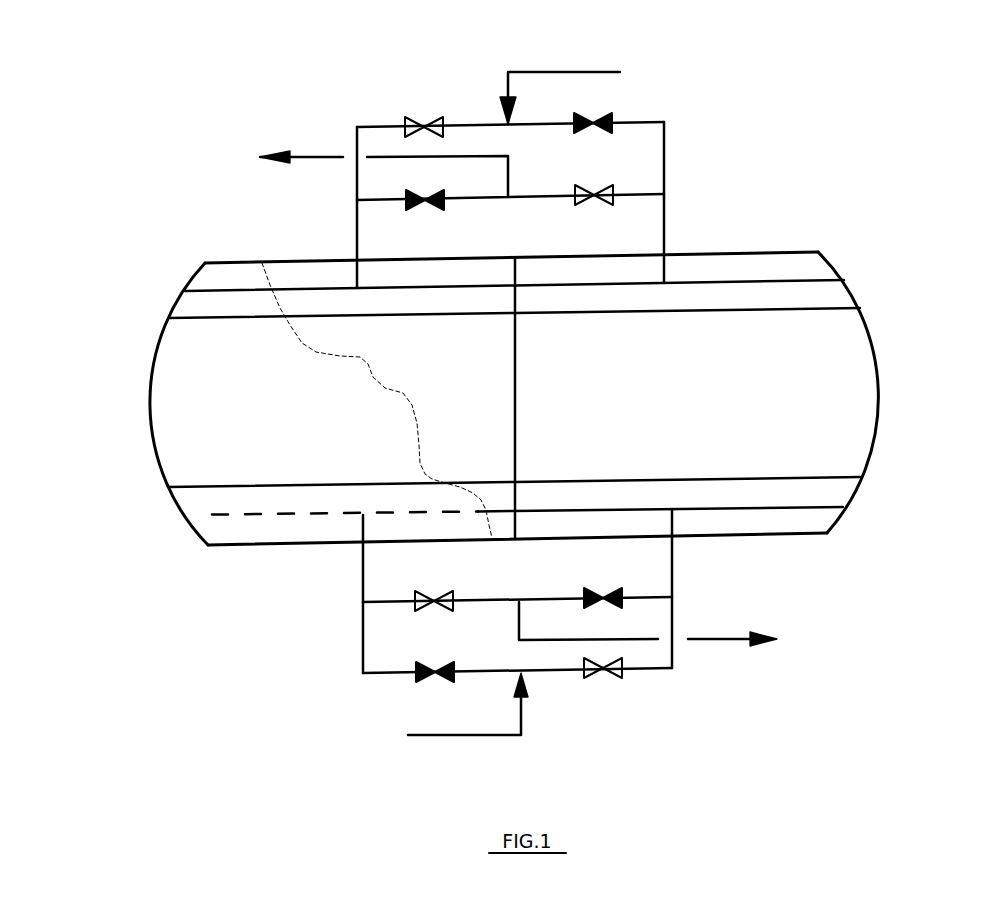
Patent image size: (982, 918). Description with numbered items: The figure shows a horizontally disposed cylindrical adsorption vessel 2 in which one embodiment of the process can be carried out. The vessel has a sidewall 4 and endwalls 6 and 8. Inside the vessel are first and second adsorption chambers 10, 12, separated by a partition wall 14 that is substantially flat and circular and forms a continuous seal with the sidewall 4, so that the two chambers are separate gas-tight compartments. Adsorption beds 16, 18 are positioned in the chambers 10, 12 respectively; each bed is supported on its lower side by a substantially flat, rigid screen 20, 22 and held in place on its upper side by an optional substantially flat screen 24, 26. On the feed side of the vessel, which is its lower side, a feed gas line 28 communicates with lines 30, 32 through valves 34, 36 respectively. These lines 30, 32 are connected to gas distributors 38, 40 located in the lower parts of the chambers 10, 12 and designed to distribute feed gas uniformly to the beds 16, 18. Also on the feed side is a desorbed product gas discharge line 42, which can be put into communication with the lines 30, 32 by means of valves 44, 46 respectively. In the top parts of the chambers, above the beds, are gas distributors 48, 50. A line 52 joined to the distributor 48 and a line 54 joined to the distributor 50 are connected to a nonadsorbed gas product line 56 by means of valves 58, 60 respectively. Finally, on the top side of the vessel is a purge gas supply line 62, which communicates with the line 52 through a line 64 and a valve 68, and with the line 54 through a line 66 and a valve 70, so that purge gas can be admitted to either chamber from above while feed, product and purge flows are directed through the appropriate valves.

The adsorption vessel 2 is at (887, 258).
The sidewall 4 is at (787, 535).
The endwall 6 is at (152, 442).
The endwall 8 is at (878, 400).
The first adsorption chamber 10 is at (444, 413).
The second adsorption chamber 12 is at (690, 403).
The partition wall 14 is at (517, 409).
The adsorption bed 16 is at (178, 362).
The adsorption bed 18 is at (848, 348).
The screen 20 is at (337, 487).
The screen 22 is at (828, 477).
The screen 24 is at (350, 318).
The screen 26 is at (745, 310).
The feed gas line 28 is at (522, 713).
The line 30 is at (364, 629).
The line 32 is at (672, 605).
The valve 34 is at (418, 678).
The valve 36 is at (617, 672).
The gas distributor 38 is at (247, 517).
The gas distributor 40 is at (817, 507).
The desorbed product gas discharge line 42 is at (712, 639).
The valve 44 is at (417, 608).
The valve 46 is at (612, 595).
The gas distributor 48 is at (222, 290).
The gas distributor 50 is at (772, 278).
The line 52 is at (357, 216).
The line 54 is at (664, 210).
The nonadsorbed gas product line 56 is at (327, 157).
The valve 58 is at (428, 200).
The valve 60 is at (602, 195).
The purge gas supply line 62 is at (558, 72).
The line 64 is at (368, 127).
The line 66 is at (664, 155).
The valve 68 is at (422, 127).
The valve 70 is at (593, 123).